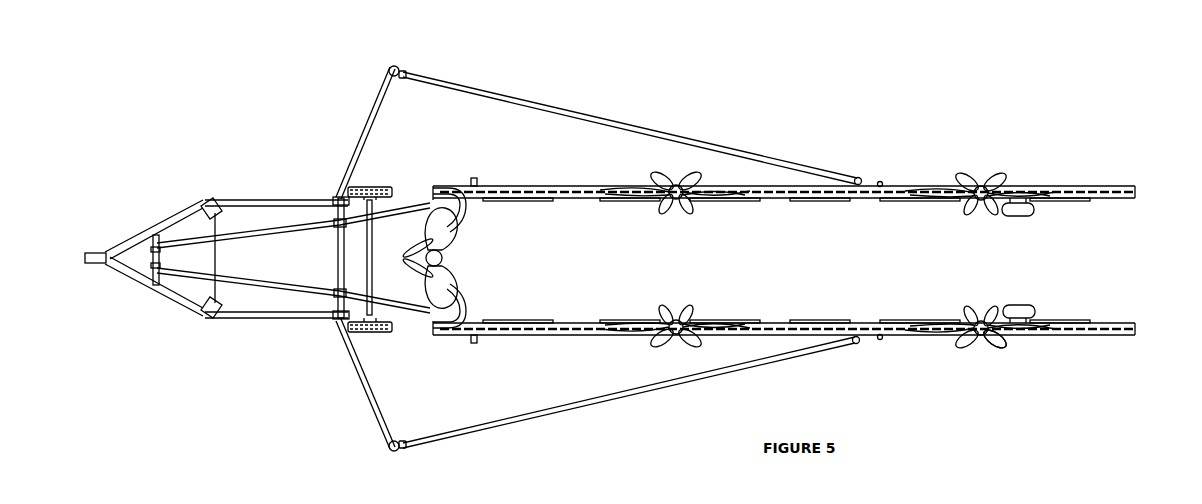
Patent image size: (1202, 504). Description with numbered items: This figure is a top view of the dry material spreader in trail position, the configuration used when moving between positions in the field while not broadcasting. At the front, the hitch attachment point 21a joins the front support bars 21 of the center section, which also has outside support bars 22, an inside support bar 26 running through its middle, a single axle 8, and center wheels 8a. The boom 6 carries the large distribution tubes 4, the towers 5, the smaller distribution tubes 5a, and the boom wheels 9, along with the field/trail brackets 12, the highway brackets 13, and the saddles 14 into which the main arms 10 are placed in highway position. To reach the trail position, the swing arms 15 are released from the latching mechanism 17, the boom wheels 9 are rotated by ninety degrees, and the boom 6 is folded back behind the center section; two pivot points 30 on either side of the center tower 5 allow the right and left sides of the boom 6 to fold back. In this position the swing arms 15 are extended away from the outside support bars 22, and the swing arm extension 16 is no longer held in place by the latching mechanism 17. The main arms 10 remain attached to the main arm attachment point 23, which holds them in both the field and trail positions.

The large distribution tubes 4 is at (265, 280).
The towers 5 is at (440, 257).
The smaller distribution tubes 5a is at (1027, 359).
The boom 6 is at (812, 232).
The single axle 8 is at (367, 258).
The center wheels 8a is at (403, 260).
The boom wheels 9 is at (1045, 260).
The main arms 10 is at (630, 253).
The field/trail brackets 12 is at (889, 250).
The highway brackets 13 is at (925, 250).
The saddles 14 is at (521, 253).
The swing arms 15 is at (338, 276).
The swing arm extension 16 is at (425, 259).
The latching mechanism 17 is at (177, 245).
The front support bars 21 is at (143, 235).
The hitch attachment point 21a is at (87, 226).
The outside support bars 22 is at (271, 265).
The main arm attachment point 23 is at (443, 258).
The inside support bar 26 is at (318, 258).
The pivot points 30 is at (475, 246).